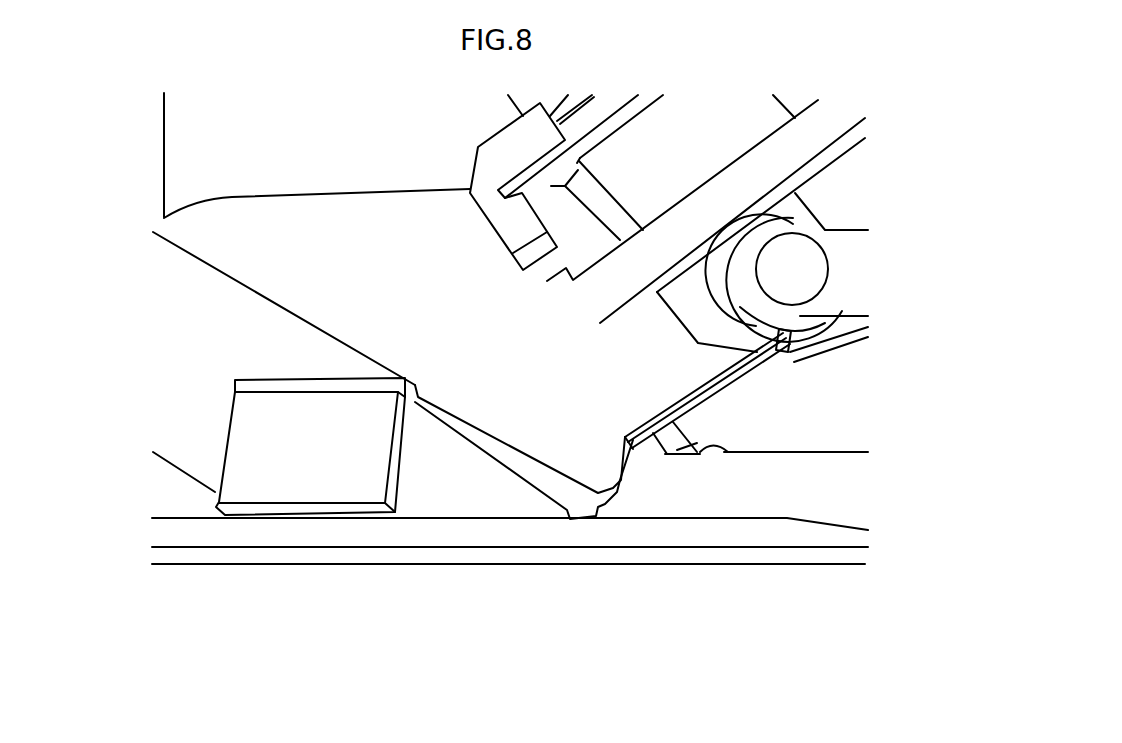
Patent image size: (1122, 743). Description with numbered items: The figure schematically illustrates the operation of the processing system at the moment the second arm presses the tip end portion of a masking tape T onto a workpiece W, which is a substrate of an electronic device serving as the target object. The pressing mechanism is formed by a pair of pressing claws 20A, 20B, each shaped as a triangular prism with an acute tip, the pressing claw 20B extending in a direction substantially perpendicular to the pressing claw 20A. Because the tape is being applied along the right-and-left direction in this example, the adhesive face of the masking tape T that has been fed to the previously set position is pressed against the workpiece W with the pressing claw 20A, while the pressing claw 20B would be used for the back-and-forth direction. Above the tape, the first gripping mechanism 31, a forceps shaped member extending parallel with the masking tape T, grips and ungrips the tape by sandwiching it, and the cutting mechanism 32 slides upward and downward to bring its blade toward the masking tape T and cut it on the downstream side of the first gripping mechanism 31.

The cutting mechanism 32 is at (510, 225).
The first gripping mechanism 31 is at (693, 453).
The masking tape T is at (620, 483).
The pressing claw 20A is at (497, 468).
The pressing claw 20B is at (242, 428).
The workpiece W is at (523, 535).